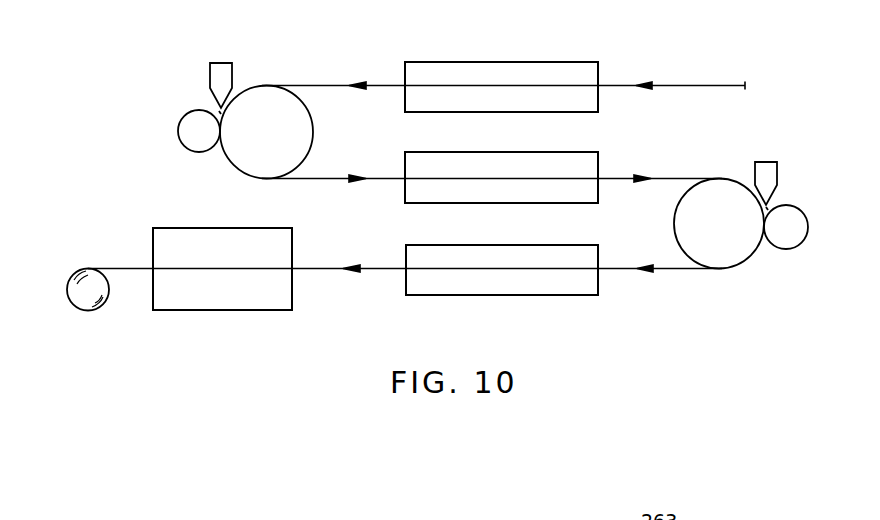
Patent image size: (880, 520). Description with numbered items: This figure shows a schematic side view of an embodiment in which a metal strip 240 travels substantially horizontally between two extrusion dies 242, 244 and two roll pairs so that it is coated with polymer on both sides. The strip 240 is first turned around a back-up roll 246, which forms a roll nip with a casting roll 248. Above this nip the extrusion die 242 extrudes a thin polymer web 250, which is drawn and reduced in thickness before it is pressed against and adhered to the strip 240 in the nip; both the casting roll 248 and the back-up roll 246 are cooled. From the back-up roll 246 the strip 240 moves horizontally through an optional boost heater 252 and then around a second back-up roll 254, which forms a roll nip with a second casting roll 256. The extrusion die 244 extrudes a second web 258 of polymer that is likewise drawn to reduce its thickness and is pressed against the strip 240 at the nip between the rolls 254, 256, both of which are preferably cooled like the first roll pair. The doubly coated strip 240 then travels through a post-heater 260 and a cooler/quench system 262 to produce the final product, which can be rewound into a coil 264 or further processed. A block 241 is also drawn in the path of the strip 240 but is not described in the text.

The metal strip 240 is at (323, 179).
The dryer 241 is at (507, 62).
The extrusion die 242 is at (226, 63).
The extrusion die 244 is at (768, 162).
The back-up roll 246 is at (312, 121).
The casting roll 248 is at (188, 148).
The polymer web 250 is at (219, 111).
The boost heater 252 is at (585, 152).
The back-up roll 254 is at (674, 222).
The casting roll 256 is at (793, 248).
The second web 258 is at (775, 204).
The post-heater 260 is at (590, 295).
The cooler/quench system 262 is at (240, 310).
The coil 264 is at (88, 311).